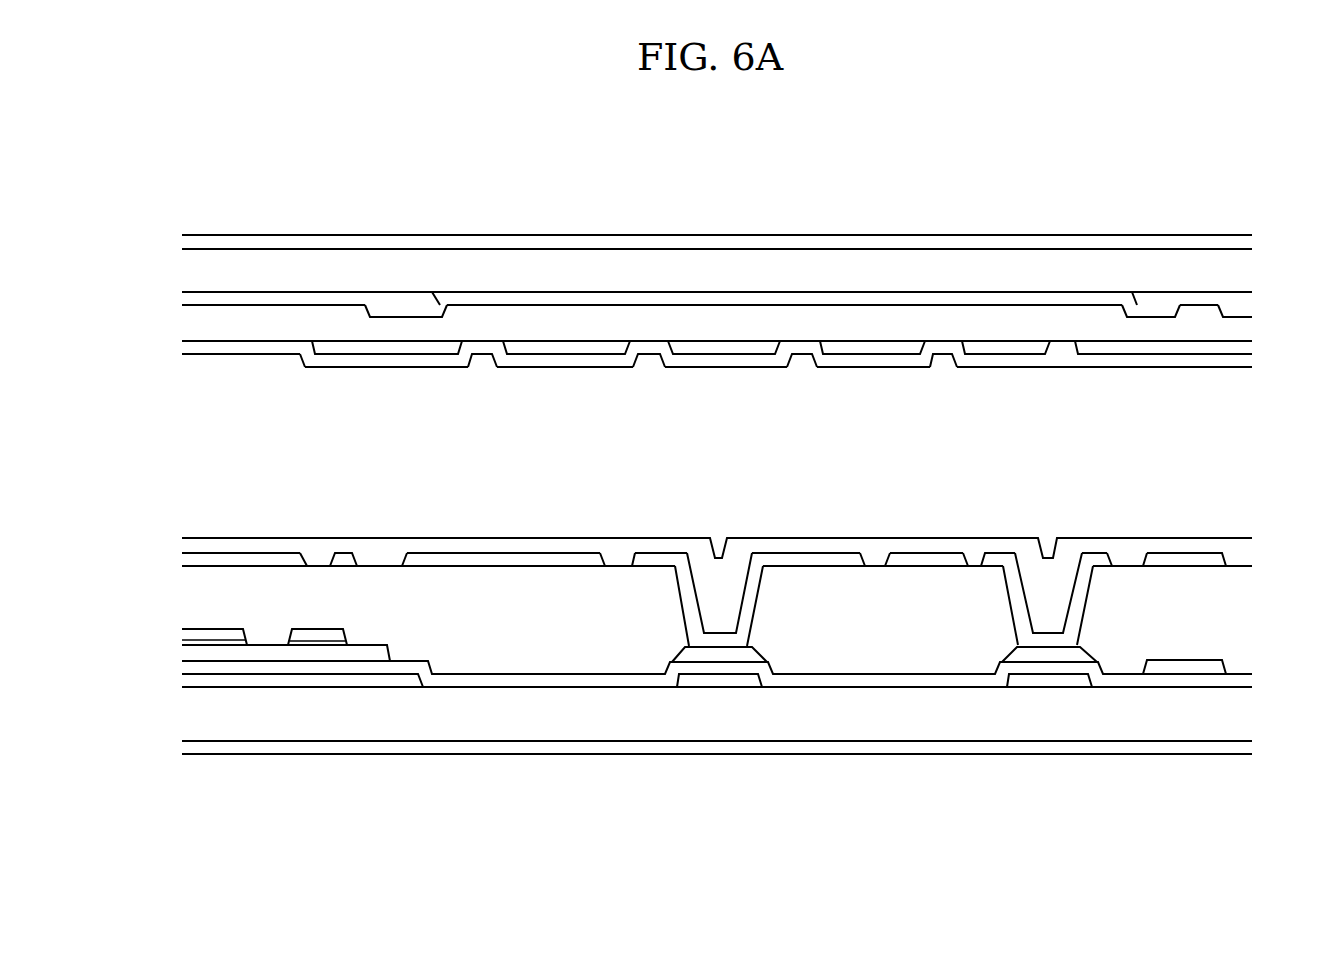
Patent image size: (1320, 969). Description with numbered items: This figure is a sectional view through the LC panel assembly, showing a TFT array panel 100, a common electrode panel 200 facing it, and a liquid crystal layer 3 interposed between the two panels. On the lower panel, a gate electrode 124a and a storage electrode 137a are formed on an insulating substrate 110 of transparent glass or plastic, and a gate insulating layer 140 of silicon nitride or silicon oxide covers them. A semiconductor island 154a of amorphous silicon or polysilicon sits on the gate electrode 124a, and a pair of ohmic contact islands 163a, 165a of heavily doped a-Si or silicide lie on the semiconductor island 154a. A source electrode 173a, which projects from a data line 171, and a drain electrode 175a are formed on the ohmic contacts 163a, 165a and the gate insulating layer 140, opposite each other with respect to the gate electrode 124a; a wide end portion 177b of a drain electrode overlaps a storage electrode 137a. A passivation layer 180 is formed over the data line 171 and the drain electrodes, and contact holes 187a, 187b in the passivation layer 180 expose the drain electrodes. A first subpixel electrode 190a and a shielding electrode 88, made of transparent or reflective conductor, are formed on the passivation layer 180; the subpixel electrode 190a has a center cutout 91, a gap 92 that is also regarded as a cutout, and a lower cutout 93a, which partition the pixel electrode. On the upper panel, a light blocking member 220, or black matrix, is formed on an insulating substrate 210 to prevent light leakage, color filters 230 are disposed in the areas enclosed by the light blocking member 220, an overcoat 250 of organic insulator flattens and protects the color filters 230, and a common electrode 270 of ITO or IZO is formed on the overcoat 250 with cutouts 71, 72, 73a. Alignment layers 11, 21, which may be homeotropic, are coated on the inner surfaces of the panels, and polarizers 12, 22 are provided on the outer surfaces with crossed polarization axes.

The liquid crystal layer 3 is at (205, 462).
The alignment layer 11 is at (480, 545).
The polarizer 12 is at (630, 752).
The alignment layer 21 is at (240, 353).
The polarizer 22 is at (808, 240).
The cutout 71 is at (637, 355).
The cutout 72 is at (305, 358).
The cutout 73a is at (1052, 347).
The shielding electrode 88 is at (1207, 555).
The center cutout 91 is at (602, 550).
The gap 92 is at (305, 557).
The lower cutout 93a is at (1113, 553).
The TFT array panel 100 is at (715, 662).
The insulating substrate 110 is at (800, 730).
The gate electrode 124a is at (280, 682).
The storage electrode 137a is at (690, 683).
The gate insulating layer 140 is at (552, 680).
The semiconductor island 154a is at (372, 653).
The ohmic contact island 163a is at (223, 645).
The ohmic contact island 165a is at (335, 643).
The data line 171 is at (1183, 665).
The source electrode 173a is at (200, 645).
The drain electrode 175a is at (308, 637).
The wide end portion 177b is at (718, 655).
The passivation layer 180 is at (590, 640).
The contact hole 187a is at (710, 580).
The contact hole 187b is at (1058, 580).
The first subpixel electrode 190a is at (252, 560).
The common electrode panel 200 is at (717, 290).
The insulating substrate 210 is at (665, 262).
The light blocking member 220 is at (390, 300).
The color filter 230 is at (893, 300).
The overcoat 250 is at (278, 317).
The common electrode 270 is at (397, 355).